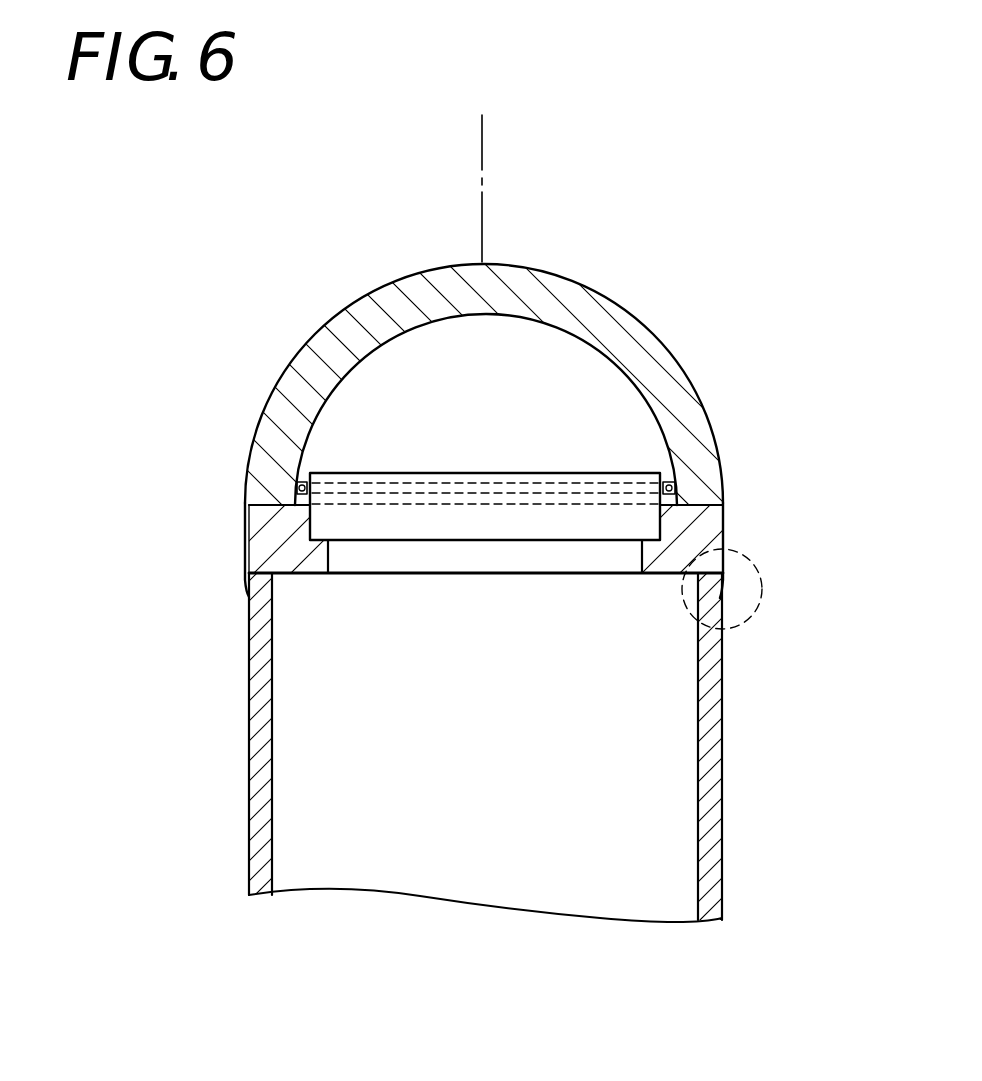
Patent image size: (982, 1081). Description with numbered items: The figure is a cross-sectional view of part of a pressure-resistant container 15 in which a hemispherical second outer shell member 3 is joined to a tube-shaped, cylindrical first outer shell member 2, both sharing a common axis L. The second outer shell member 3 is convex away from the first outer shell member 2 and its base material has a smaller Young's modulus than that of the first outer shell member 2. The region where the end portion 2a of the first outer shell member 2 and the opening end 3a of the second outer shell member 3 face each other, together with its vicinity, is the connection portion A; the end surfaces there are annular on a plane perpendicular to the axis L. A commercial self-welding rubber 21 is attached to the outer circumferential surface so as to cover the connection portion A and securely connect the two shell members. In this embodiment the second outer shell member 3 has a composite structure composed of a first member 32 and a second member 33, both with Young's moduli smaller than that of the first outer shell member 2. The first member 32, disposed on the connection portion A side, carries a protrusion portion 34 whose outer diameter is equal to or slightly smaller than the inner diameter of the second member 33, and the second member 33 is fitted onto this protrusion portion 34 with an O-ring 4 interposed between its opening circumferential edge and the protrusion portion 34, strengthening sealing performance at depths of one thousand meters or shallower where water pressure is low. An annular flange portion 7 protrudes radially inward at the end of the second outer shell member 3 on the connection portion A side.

The pressure-resistant container 15 is at (355, 212).
The axis L is at (483, 150).
The second outer shell member 3 is at (790, 331).
The second member 33 is at (680, 404).
The first member 32 is at (721, 478).
The opening end 3a is at (271, 560).
The protrusion portion 34 is at (305, 478).
The O-ring 4 is at (668, 480).
The annular flange portion 7 is at (650, 553).
The first outer shell member 2 is at (704, 655).
The self-welding rubber 21 is at (249, 558).
The end portion 2a is at (257, 593).
The connection portion A is at (760, 578).